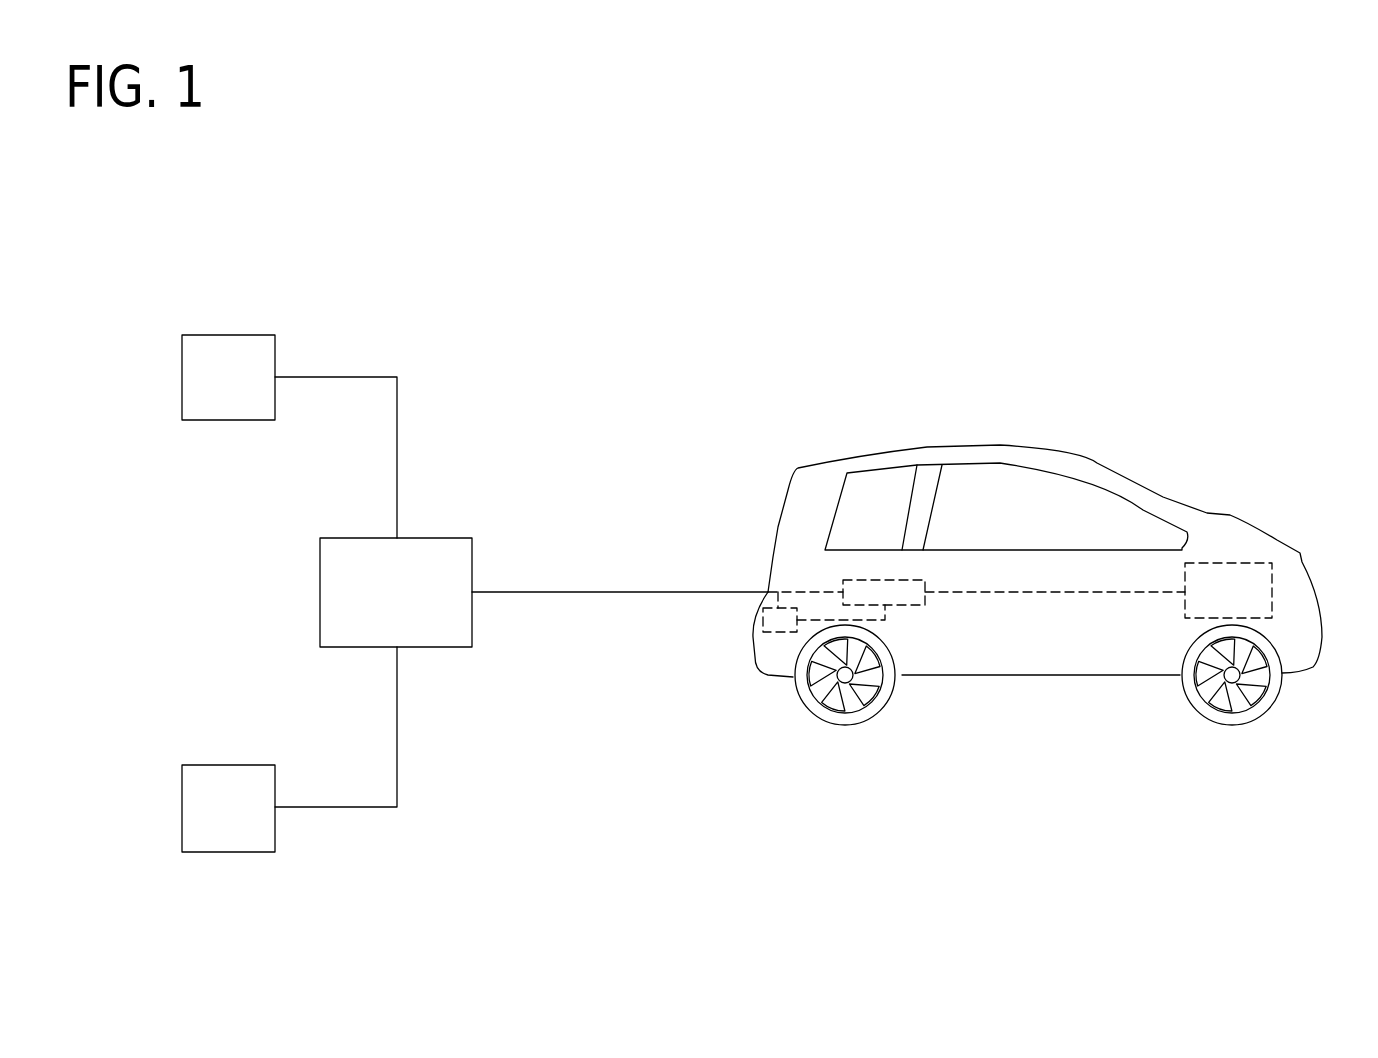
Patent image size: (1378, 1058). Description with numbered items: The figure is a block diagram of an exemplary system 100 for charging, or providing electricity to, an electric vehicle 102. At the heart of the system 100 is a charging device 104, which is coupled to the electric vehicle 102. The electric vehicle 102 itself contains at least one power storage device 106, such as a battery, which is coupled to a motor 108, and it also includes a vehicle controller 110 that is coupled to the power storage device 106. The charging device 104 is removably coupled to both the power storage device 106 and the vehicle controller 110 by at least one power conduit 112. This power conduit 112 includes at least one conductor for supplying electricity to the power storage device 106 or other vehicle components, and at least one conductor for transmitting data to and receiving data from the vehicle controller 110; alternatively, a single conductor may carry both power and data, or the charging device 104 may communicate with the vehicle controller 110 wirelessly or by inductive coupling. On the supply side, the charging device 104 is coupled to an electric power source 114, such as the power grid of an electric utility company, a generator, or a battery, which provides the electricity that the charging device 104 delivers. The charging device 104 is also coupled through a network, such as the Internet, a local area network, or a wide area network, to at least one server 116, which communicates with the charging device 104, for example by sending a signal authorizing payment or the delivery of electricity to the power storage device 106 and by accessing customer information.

The system 100 is at (788, 276).
The electric vehicle 102 is at (1030, 382).
The charging device 104 is at (437, 538).
The power storage device 106 is at (920, 605).
The motor 108 is at (1230, 563).
The vehicle controller 110 is at (772, 633).
The power conduit 112 is at (633, 592).
The electric power source 114 is at (245, 765).
The server 116 is at (250, 333).